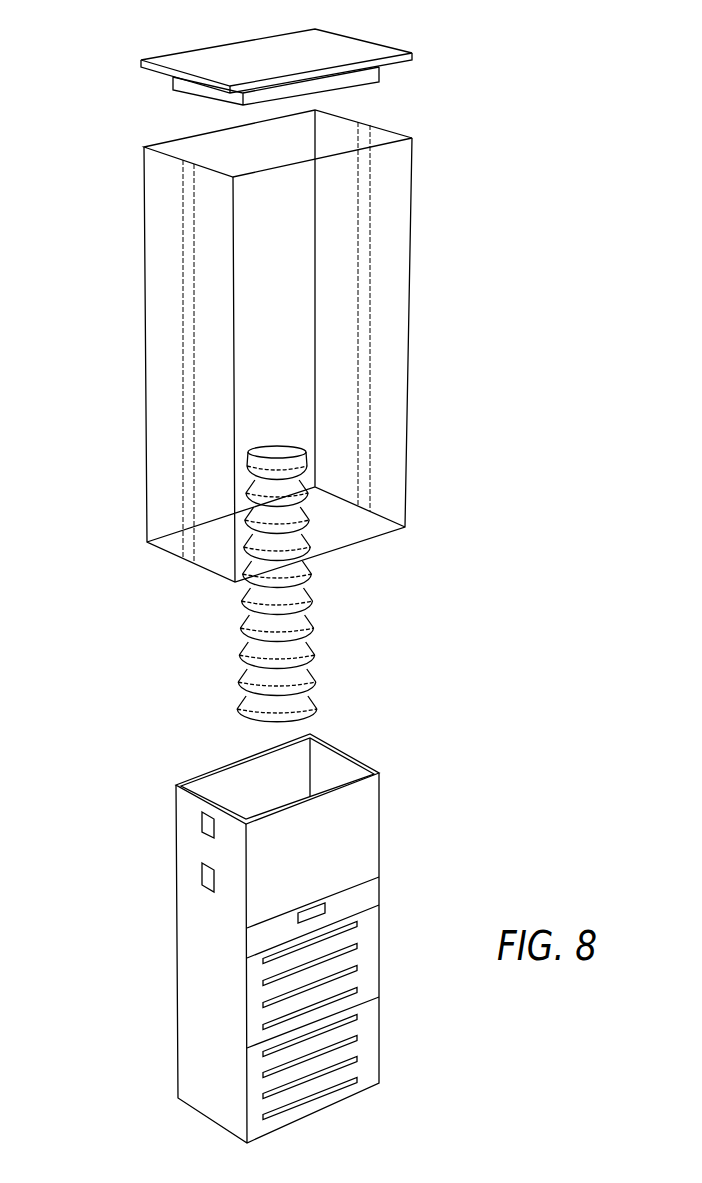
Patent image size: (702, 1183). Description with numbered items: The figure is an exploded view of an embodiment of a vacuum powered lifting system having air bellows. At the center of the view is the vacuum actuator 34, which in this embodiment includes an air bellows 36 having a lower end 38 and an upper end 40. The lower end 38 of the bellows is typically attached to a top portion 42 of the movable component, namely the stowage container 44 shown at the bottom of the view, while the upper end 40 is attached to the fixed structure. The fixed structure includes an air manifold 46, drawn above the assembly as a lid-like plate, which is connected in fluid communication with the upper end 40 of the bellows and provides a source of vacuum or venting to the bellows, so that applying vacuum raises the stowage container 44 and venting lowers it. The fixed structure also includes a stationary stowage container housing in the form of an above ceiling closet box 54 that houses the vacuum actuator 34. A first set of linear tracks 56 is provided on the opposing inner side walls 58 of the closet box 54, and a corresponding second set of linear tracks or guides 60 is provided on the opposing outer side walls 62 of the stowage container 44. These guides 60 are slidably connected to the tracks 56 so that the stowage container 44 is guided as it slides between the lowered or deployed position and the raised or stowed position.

The vacuum actuator 34 is at (299, 578).
The air bellows 36 is at (245, 573).
The lower end 38 is at (317, 700).
The upper end 40 is at (270, 448).
The top portion 42 is at (202, 775).
The stowage container 44 is at (281, 938).
The air manifold 46 is at (357, 53).
The above ceiling closet box 54 is at (329, 346).
The first set of linear tracks 56 is at (193, 383).
The inner side walls 58 is at (157, 289).
The second set of linear tracks or guides 60 is at (205, 825).
The outer side walls 62 is at (368, 847).